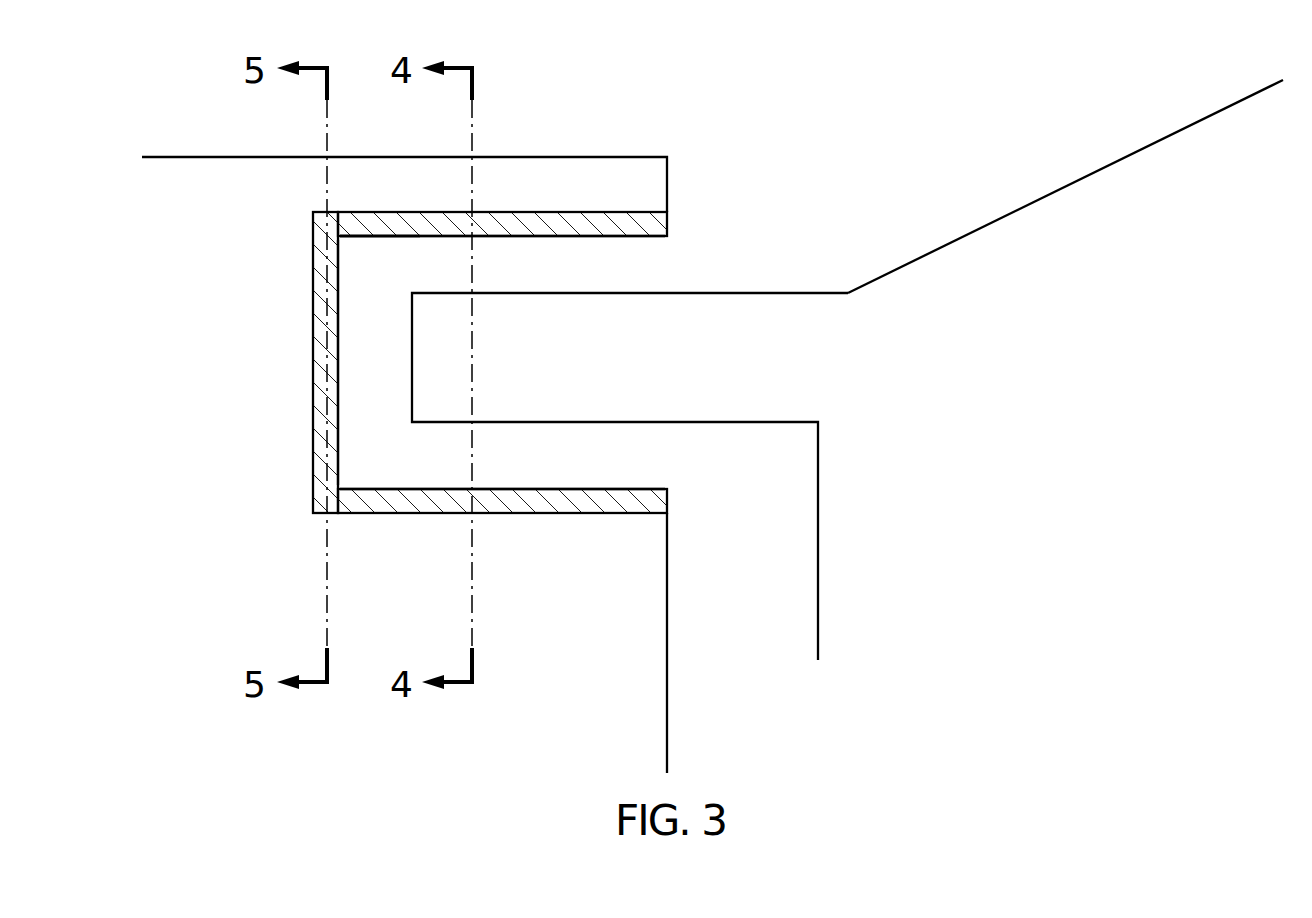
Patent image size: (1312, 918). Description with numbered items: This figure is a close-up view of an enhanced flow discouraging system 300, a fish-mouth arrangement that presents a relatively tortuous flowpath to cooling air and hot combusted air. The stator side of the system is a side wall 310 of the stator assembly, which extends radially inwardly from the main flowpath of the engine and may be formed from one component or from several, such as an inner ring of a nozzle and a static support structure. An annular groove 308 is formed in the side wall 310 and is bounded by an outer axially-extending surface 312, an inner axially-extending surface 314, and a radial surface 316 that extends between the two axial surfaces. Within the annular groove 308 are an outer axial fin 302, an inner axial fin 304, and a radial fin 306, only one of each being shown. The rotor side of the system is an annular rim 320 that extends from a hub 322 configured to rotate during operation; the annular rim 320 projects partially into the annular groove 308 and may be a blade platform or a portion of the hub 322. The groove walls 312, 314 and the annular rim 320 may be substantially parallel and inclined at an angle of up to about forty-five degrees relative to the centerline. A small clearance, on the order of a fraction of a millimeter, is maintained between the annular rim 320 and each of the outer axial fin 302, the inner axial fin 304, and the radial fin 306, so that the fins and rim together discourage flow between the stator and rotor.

The enhanced flow discouraging system 300 is at (918, 79).
The outer axial fin 302 is at (533, 221).
The inner axial fin 304 is at (524, 505).
The radial fin 306 is at (318, 356).
The annular groove 308 is at (385, 241).
The side wall 310 is at (668, 190).
The outer axially-extending surface 312 is at (605, 214).
The inner axially-extending surface 314 is at (605, 513).
The radial surface 316 is at (315, 393).
The annular rim 320 is at (769, 357).
The hub 322 is at (1038, 218).